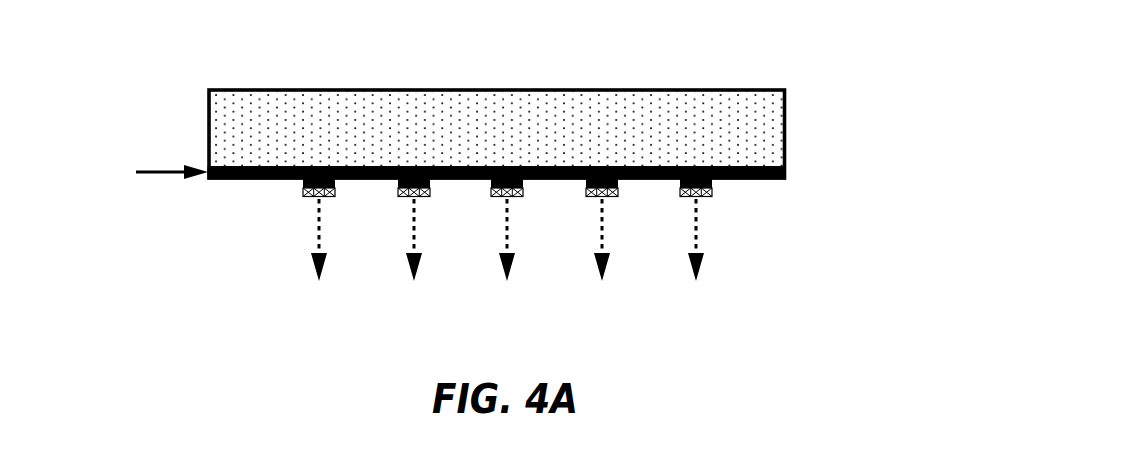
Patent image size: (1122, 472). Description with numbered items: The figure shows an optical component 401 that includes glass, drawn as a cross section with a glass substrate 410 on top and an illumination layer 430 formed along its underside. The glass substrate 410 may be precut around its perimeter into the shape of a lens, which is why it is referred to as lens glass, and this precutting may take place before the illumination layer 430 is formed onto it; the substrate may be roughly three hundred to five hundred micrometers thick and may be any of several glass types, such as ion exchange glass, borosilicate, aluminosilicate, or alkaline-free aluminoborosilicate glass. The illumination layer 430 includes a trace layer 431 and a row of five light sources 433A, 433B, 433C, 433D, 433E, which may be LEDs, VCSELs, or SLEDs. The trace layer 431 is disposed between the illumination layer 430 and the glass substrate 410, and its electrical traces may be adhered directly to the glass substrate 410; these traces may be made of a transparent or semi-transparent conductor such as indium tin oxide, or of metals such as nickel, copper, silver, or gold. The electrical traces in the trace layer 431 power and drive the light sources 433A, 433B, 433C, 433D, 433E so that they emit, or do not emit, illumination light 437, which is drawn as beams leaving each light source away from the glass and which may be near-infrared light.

The optical component 401 is at (780, 24).
The glass substrate 410 is at (428, 140).
The illumination layer 430 is at (795, 167).
The trace layer 431 is at (113, 173).
The light source 433A is at (303, 194).
The light source 433B is at (398, 197).
The light source 433C is at (491, 197).
The light source 433D is at (586, 197).
The light source 433E is at (680, 197).
The illumination light 437 is at (510, 255).